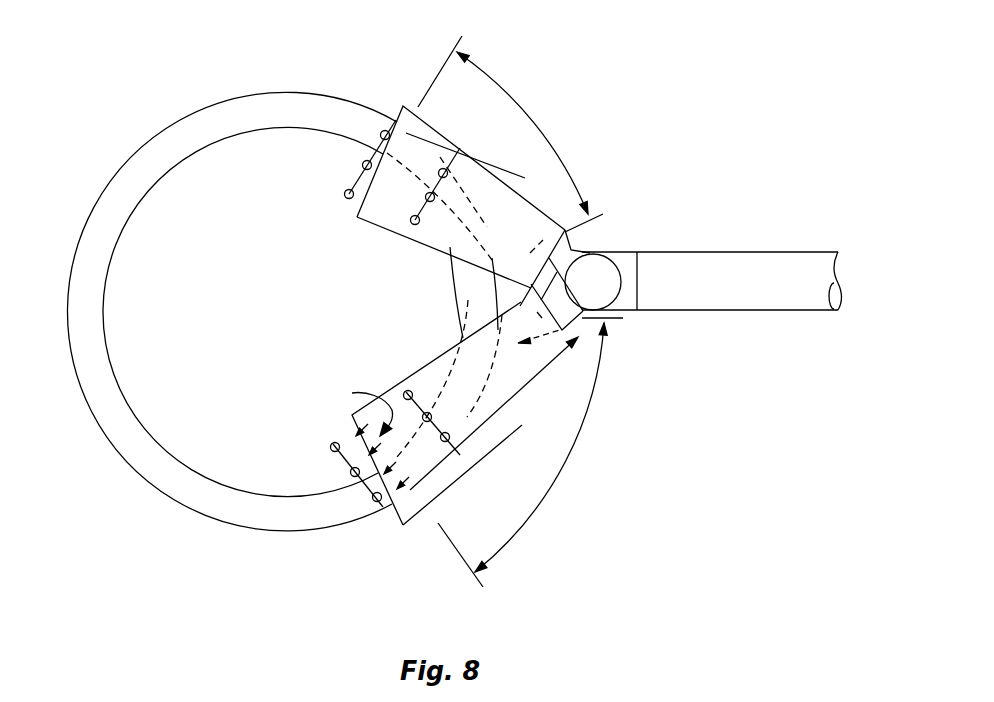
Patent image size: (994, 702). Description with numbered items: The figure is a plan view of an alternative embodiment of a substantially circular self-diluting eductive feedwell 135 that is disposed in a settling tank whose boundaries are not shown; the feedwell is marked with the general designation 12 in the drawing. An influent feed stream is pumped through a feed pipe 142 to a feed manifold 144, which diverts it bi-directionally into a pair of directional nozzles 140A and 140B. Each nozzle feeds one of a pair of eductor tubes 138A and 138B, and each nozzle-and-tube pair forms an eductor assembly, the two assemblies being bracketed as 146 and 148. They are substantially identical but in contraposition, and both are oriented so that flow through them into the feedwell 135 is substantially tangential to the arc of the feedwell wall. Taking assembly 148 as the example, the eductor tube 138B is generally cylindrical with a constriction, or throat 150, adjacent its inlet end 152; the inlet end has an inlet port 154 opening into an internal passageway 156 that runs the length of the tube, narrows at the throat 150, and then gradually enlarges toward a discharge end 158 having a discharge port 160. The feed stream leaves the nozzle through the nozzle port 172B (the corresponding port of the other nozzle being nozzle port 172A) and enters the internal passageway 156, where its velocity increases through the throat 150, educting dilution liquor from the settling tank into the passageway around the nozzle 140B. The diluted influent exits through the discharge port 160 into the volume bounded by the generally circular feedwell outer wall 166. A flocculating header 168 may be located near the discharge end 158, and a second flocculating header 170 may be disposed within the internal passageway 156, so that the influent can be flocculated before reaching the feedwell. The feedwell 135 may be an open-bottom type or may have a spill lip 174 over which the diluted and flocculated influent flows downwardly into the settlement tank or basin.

The retaining ring 12 is at (107, 154).
The self-diluting eductive feedwell 135 is at (243, 86).
The eductor tube 138A is at (447, 247).
The eductor tube 138B is at (423, 371).
The directional nozzle 140A is at (567, 240).
The directional nozzle 140B is at (600, 253).
The feed pipe 142 is at (793, 311).
The feed manifold 144 is at (622, 310).
The nozzle and tube eductor assembly 146 is at (531, 117).
The nozzle and tube eductor assembly 148 is at (570, 457).
The throat 150 is at (480, 315).
The inlet end 152 is at (497, 288).
The inlet port 154 is at (597, 320).
The internal passageway 156 is at (606, 328).
The discharge end 158 is at (352, 415).
The discharge port 160 is at (330, 441).
The feedwell outer wall 166 is at (73, 247).
The flocculating header 168 is at (375, 500).
The second flocculating header 170 is at (460, 476).
The nozzle port 172A is at (538, 262).
The nozzle port 172B is at (560, 333).
The spill lip 174 is at (327, 512).